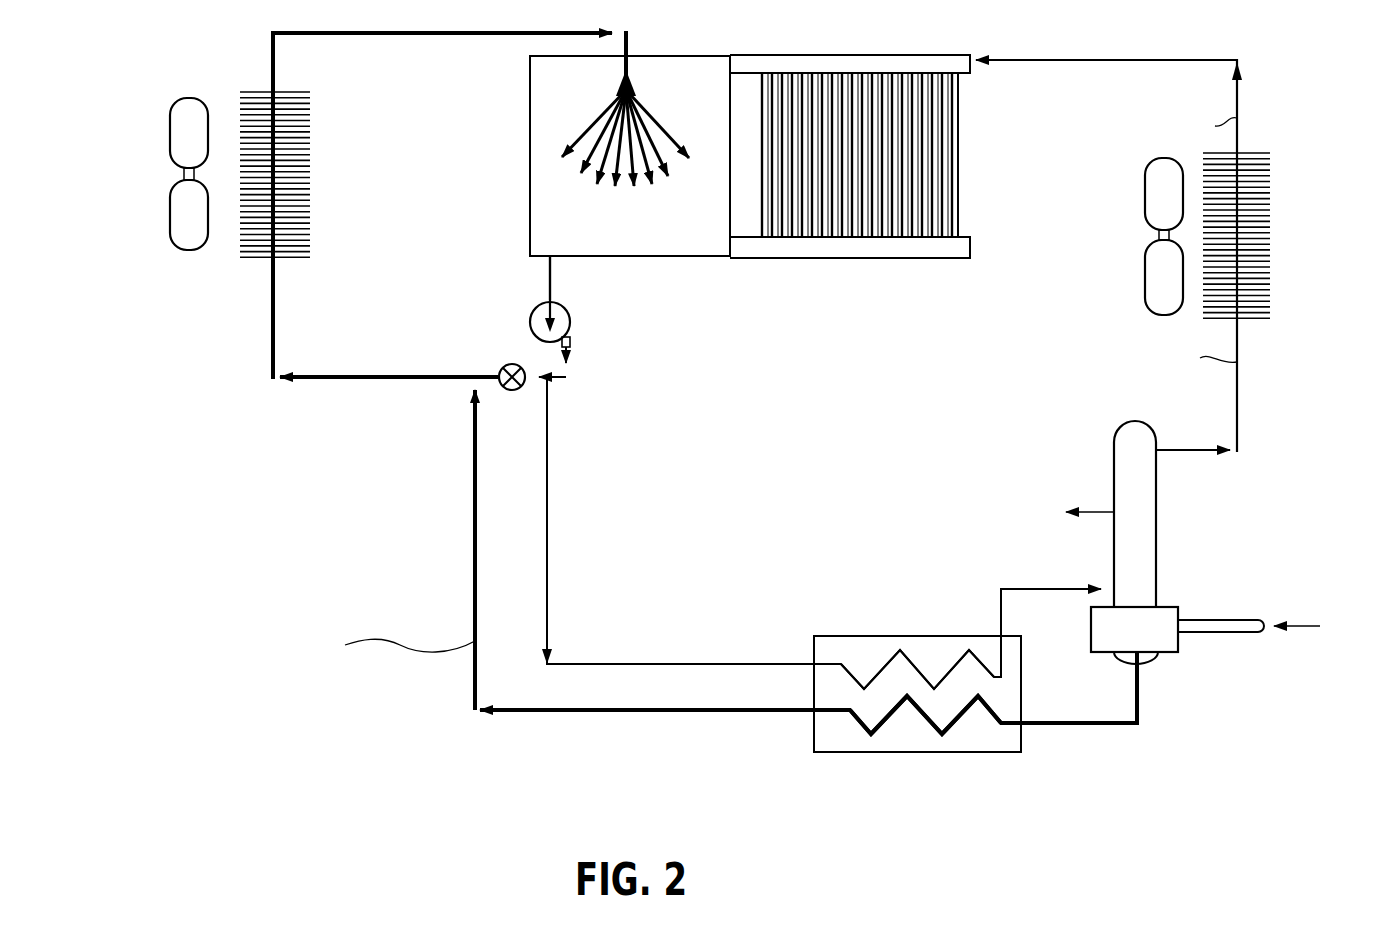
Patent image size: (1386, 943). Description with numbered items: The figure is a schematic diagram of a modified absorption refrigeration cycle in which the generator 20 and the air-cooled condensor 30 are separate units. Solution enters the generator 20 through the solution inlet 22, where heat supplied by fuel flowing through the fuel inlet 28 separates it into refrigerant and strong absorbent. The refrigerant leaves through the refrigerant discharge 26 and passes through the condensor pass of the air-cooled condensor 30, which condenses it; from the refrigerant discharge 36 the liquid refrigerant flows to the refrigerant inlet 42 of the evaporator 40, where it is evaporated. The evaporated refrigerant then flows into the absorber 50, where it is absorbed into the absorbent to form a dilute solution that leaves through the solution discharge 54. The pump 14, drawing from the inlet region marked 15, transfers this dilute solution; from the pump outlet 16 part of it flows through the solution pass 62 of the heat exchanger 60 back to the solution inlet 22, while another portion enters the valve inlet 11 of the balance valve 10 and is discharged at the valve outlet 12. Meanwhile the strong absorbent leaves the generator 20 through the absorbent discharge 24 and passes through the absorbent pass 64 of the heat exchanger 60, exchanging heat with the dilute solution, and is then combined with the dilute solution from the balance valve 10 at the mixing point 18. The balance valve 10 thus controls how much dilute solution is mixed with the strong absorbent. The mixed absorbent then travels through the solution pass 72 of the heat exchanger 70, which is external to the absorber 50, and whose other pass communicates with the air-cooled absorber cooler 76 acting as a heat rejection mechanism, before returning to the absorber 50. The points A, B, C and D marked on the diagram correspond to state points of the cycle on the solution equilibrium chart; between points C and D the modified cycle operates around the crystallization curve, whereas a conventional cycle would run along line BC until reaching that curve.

The balance valve 10 is at (512, 390).
The valve inlet 11 is at (533, 341).
The valve outlet 12 is at (503, 366).
The pump 14 is at (571, 321).
The pump inlet 15 is at (533, 325).
The pump outlet 16 is at (568, 370).
The mixing point 18 is at (476, 376).
The generator 20 is at (1145, 512).
The solution inlet 22 is at (1001, 600).
The absorbent discharge 24 is at (1140, 708).
The refrigerant discharge 26 is at (1200, 452).
The fuel inlet 28 is at (1222, 620).
The air-cooled condensor 30 is at (1288, 228).
The refrigerant discharge 36 is at (1237, 128).
The evaporator 40 is at (930, 28).
The refrigerant inlet 42 is at (1030, 60).
The absorber 50 is at (728, 256).
The solution discharge 54 is at (552, 273).
The heat exchanger 60 is at (948, 752).
The solution pass 62 is at (922, 665).
The absorbent pass 64 is at (858, 730).
The heat exchanger 70 is at (122, 185).
The solution pass 72 is at (276, 206).
The air-cooled absorber cooler 76 is at (190, 252).
The point A is at (1033, 589).
The point B is at (1150, 665).
The point C is at (475, 497).
The point D is at (548, 258).